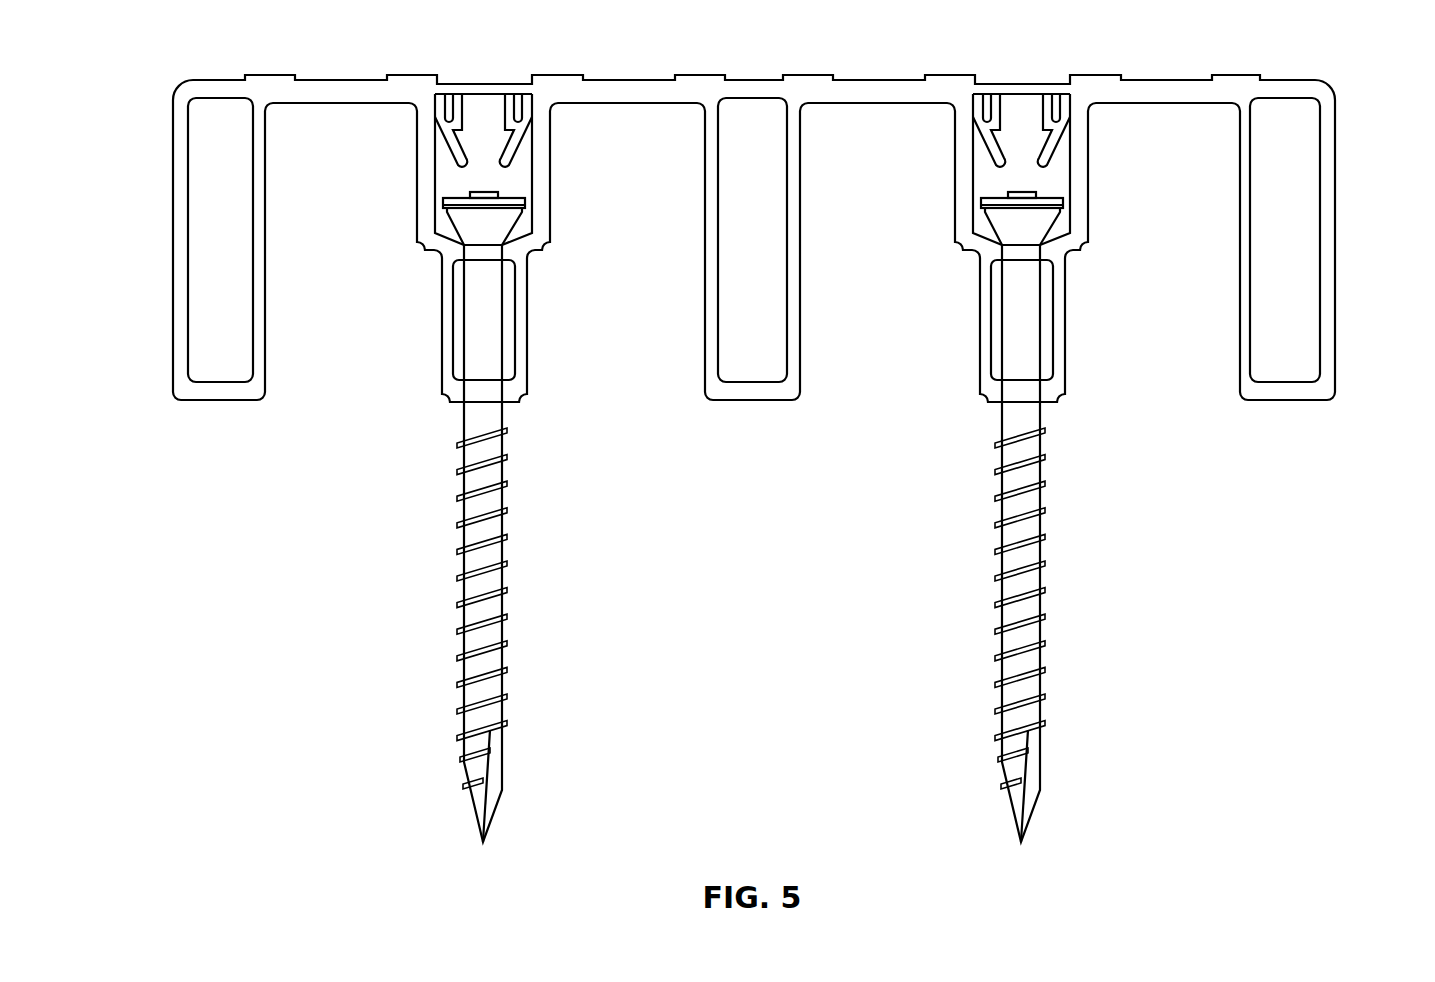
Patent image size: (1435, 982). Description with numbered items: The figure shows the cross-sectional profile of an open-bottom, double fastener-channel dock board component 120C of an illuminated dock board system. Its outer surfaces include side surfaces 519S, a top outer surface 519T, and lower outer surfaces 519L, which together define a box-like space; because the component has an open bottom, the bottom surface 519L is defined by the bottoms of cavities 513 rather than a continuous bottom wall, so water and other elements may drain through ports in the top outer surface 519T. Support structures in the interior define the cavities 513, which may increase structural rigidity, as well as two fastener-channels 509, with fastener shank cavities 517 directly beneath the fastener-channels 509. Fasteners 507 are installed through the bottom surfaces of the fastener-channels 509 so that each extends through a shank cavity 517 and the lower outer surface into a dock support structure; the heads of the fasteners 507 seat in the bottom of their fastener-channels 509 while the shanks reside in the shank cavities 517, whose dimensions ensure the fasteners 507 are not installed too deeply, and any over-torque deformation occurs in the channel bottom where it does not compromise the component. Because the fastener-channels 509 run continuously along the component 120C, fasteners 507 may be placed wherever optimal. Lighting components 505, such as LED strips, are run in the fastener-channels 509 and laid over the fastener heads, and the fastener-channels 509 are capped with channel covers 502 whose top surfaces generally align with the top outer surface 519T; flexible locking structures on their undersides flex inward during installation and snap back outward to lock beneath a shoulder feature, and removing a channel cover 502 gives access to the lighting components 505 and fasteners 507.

The open-bottom, double fastener-channel dock board component 120C is at (153, 60).
The channel cover 502 is at (488, 83).
The lighting component 505 is at (485, 193).
The fastener 507 is at (503, 578).
The fastener-channel 509 is at (523, 183).
The cavity 513 is at (200, 270).
The fastener shank cavity 517 is at (508, 317).
The top outer surface 519T is at (357, 79).
The side surface 519S is at (172, 167).
The lower outer surface 519L is at (220, 400).